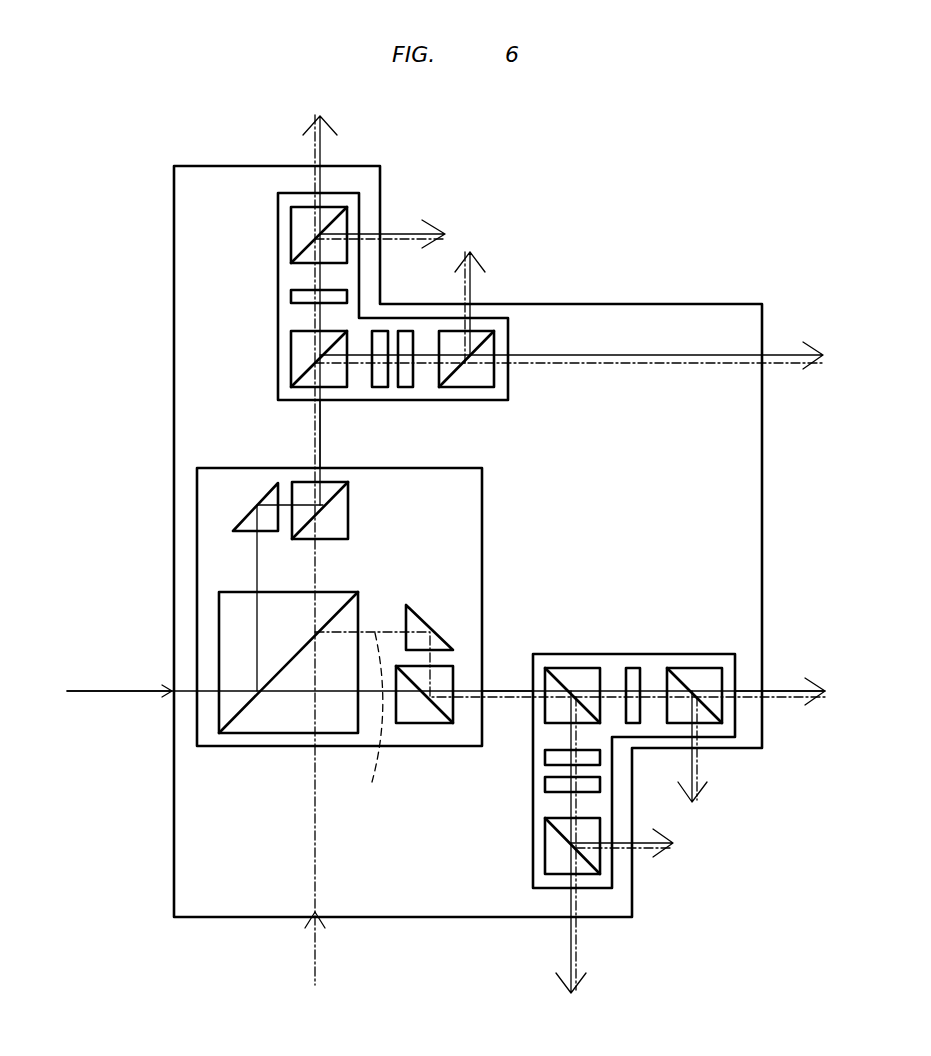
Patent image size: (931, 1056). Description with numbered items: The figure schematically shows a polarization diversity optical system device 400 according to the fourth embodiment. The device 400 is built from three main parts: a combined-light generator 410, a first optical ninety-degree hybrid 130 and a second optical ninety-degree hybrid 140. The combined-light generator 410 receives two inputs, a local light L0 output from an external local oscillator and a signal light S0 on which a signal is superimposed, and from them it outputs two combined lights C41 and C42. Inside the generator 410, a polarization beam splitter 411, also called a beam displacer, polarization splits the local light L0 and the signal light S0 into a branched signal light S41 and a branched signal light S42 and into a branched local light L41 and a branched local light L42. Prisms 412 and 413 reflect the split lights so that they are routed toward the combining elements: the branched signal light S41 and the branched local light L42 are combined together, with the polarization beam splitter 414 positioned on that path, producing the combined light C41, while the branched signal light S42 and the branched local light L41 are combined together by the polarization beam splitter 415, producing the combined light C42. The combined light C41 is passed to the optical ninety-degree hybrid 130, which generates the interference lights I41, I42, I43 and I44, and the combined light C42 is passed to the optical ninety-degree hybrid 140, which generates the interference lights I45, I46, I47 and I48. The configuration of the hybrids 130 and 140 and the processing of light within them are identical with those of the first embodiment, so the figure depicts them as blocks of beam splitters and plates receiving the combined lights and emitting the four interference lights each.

The polarization diversity optical system device 400 is at (213, 165).
The optical 90-degree hybrid 130 is at (278, 285).
The optical 90-degree hybrid 140 is at (620, 654).
The combined-light generator 410 is at (197, 502).
The polarization beam splitter 411 is at (218, 622).
The prism 412 is at (417, 612).
The prism 413 is at (234, 530).
The polarization beam splitter 414 is at (348, 513).
The polarization beam splitter 415 is at (428, 723).
The local light L0 is at (102, 690).
The branched local light L41 is at (292, 692).
The branched local light L42 is at (257, 553).
The signal light S0 is at (313, 968).
The branched signal light S41 is at (315, 555).
The branched signal light S42 is at (570, 719).
The combined light C41 is at (345, 432).
The combined light C42 is at (499, 675).
The interference light I41 is at (345, 147).
The interference light I42 is at (404, 212).
The interference light I43 is at (790, 340).
The interference light I44 is at (495, 286).
The interference light I45 is at (785, 670).
The interference light I46 is at (718, 770).
The interference light I47 is at (600, 957).
The interference light I48 is at (643, 862).